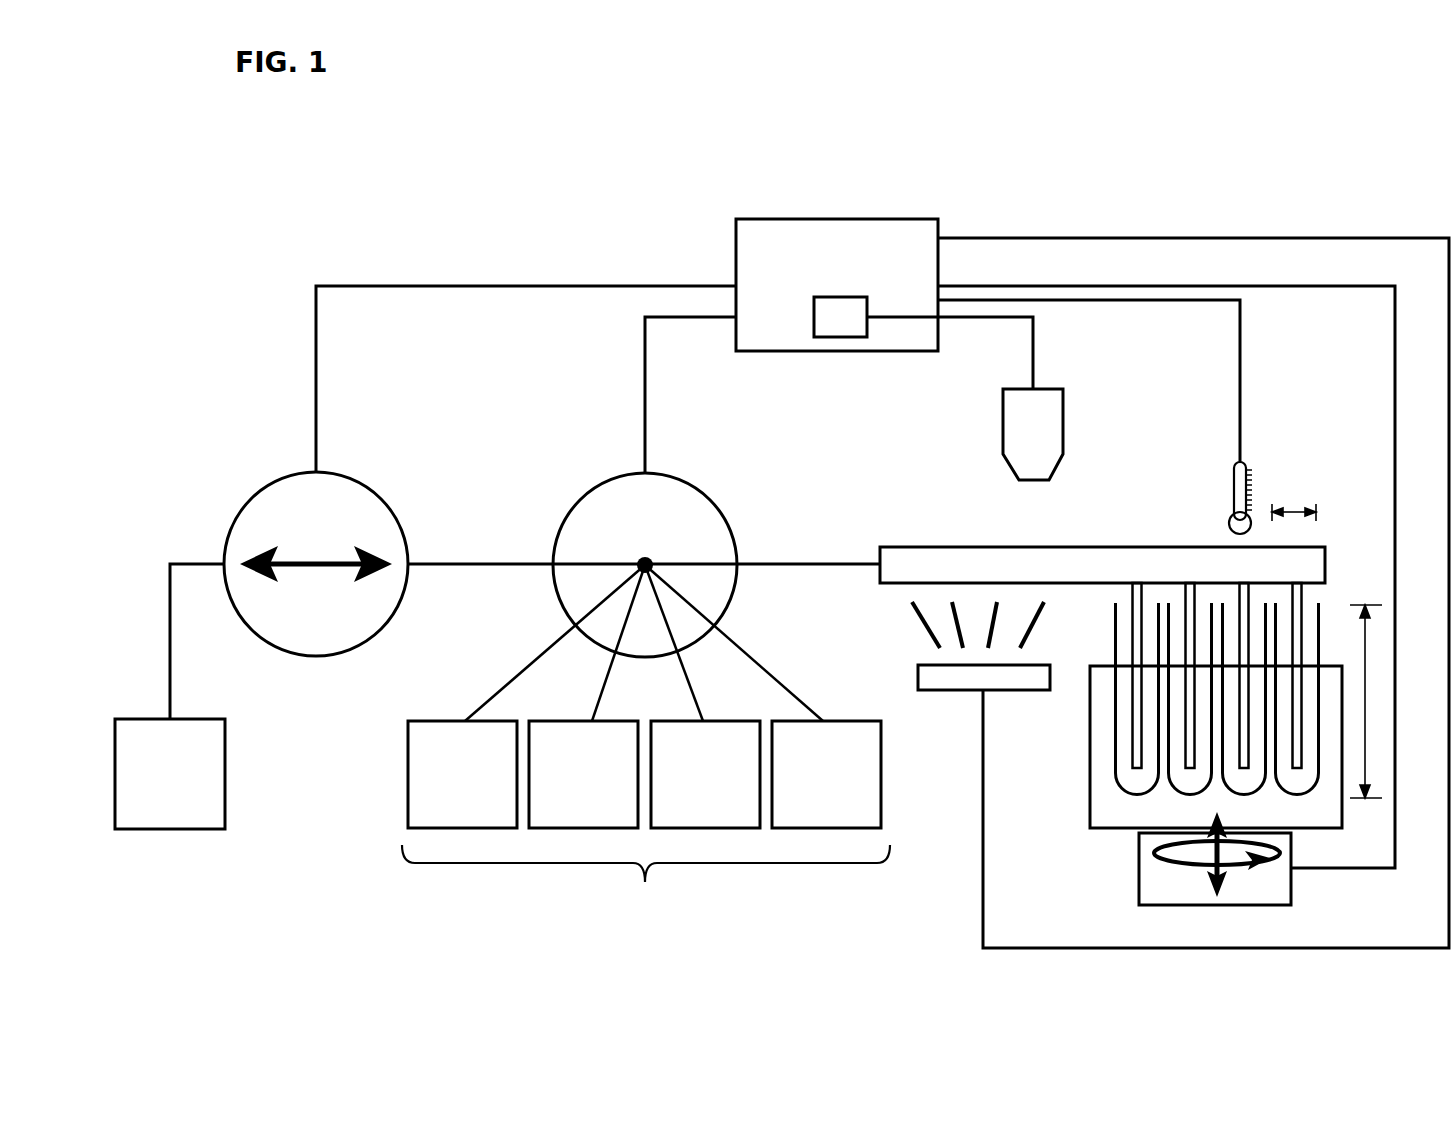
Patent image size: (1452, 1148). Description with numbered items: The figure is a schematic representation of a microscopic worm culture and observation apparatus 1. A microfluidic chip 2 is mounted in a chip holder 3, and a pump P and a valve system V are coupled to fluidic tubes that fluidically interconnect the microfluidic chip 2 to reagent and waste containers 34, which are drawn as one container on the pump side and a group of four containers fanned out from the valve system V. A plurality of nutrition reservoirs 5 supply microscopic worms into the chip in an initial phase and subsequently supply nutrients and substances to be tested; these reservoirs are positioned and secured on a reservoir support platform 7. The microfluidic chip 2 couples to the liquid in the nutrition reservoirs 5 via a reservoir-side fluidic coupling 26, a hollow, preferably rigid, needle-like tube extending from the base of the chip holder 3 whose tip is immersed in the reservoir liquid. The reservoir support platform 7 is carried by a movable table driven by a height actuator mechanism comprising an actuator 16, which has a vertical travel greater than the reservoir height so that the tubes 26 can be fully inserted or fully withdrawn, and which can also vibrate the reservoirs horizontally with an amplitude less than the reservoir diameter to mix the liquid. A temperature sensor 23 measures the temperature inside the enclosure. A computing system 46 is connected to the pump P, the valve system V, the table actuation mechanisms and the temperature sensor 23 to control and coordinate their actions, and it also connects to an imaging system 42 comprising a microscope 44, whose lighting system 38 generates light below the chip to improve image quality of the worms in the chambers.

The microscopic worm culture and observation apparatus 1 is at (1247, 146).
The microfluidic chip 2 is at (1062, 605).
The chip holder 3 is at (891, 601).
The nutrition reservoirs 5 is at (1323, 639).
The reservoir support platform 7 is at (1348, 821).
The actuator 16 is at (1268, 879).
The temperature sensor 23 is at (1212, 488).
The reservoir-side fluidic coupling 26 is at (1305, 609).
The reagent and waste containers 34 is at (163, 846).
The lighting system 38 is at (964, 704).
The imaging system 42 is at (1095, 418).
The microscope 44 is at (1070, 430).
The computing system 46 is at (906, 206).
The pump P is at (344, 476).
The valve system V is at (598, 476).